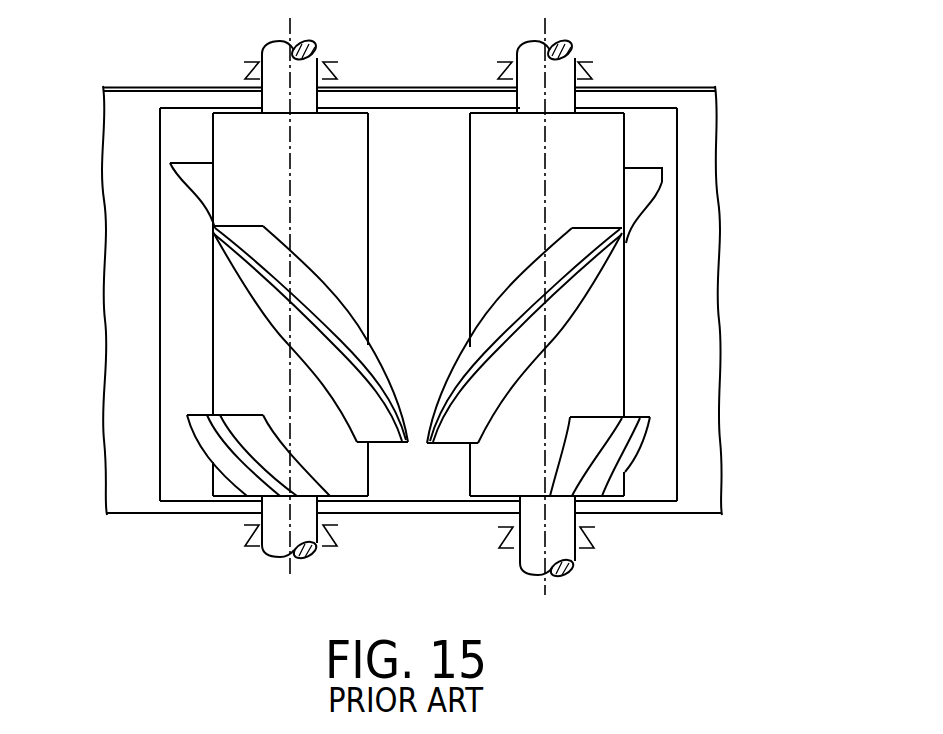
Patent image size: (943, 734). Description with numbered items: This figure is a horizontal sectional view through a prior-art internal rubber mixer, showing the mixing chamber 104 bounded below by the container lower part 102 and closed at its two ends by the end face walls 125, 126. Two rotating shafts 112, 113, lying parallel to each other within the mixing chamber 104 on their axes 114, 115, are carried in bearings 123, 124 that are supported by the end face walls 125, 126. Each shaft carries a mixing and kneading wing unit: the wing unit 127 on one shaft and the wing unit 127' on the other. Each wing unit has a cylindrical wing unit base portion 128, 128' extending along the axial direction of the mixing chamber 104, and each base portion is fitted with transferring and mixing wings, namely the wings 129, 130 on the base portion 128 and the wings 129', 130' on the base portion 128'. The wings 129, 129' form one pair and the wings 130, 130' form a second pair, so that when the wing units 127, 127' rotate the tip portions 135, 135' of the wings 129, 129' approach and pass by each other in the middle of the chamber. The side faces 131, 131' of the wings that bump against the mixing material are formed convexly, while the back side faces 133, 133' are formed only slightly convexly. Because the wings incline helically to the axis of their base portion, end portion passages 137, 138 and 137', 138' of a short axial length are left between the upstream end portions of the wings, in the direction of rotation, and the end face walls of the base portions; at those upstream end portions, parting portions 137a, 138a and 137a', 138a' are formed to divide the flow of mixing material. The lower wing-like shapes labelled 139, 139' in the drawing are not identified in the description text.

The container lower part 102 is at (441, 300).
The mixing chamber 104 is at (470, 304).
The rotating shaft 112 is at (568, 294).
The rotating shaft 113 is at (314, 282).
The axis of rotating shaft 114 is at (511, 27).
The axis of rotating shaft 115 is at (256, 21).
The bearing 123 is at (452, 74).
The bearing 124 is at (454, 564).
The end face wall of the mixing chamber 125 is at (455, 76).
The end face wall of the mixing chamber 126 is at (157, 540).
The mixing and kneading wing unit 127 is at (676, 249).
The mixing and kneading wing unit 127' is at (151, 225).
The cylindrical wing unit base portion 128 is at (695, 300).
The cylindrical wing unit base portion 128' is at (133, 282).
The transferring and mixing wing 129 is at (517, 335).
The transferring and mixing wing 129' is at (315, 334).
The transferring and mixing wing 130 is at (702, 205).
The transferring and mixing wing 130' is at (127, 189).
The side face of wing 131 is at (499, 335).
The side face of wing 131' is at (335, 332).
The back side face of wing 133 is at (550, 338).
The back side face of wing 133' is at (285, 343).
The tip portion of wing 135 is at (509, 338).
The tip portion of wing 135' is at (313, 337).
The end portion passage 137 is at (451, 502).
The end portion passage 137' is at (385, 503).
The parting portion 137a is at (475, 464).
The parting portion 137a' is at (402, 473).
The end portion passage 138 is at (622, 304).
The end portion passage 138' is at (204, 298).
The parting portion 138a is at (588, 143).
The parting portion 138a' is at (245, 172).
The lower helical blade 139 is at (600, 430).
The lower helical blade 139' is at (258, 427).